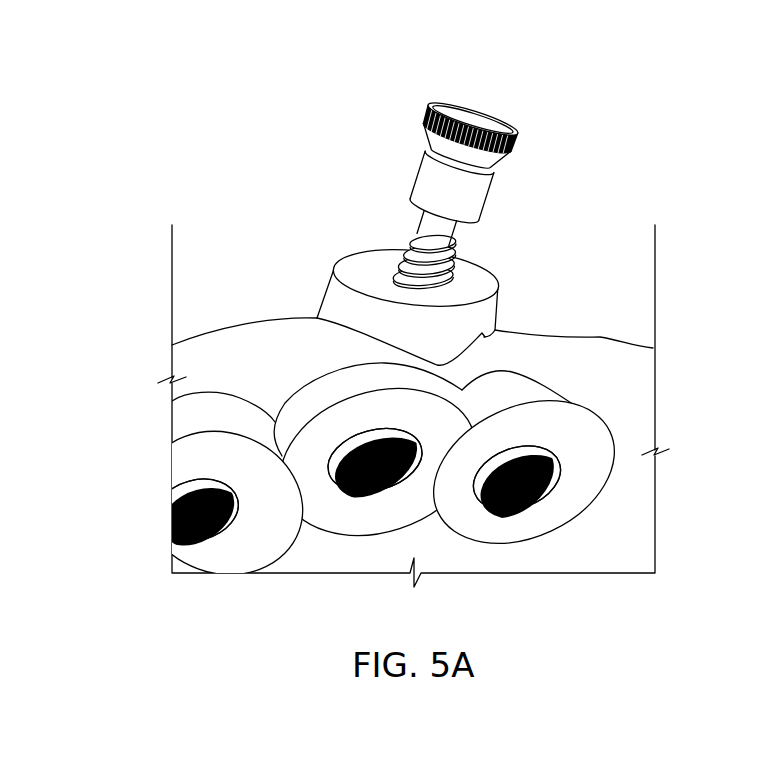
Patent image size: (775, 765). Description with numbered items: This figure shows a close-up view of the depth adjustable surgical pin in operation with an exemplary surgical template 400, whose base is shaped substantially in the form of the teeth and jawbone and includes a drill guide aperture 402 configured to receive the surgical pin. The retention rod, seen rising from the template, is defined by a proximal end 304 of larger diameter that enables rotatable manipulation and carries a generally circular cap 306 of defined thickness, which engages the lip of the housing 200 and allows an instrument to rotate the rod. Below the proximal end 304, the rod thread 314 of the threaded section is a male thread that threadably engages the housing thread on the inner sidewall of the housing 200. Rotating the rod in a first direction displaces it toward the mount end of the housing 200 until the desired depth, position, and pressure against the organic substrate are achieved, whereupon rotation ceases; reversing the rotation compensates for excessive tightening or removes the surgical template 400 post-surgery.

The housing 200 is at (389, 272).
The proximal end 304 is at (475, 185).
The cap 306 is at (512, 128).
The rod thread 314 is at (457, 252).
The surgical template 400 is at (640, 348).
The drill guide aperture 402 is at (392, 267).